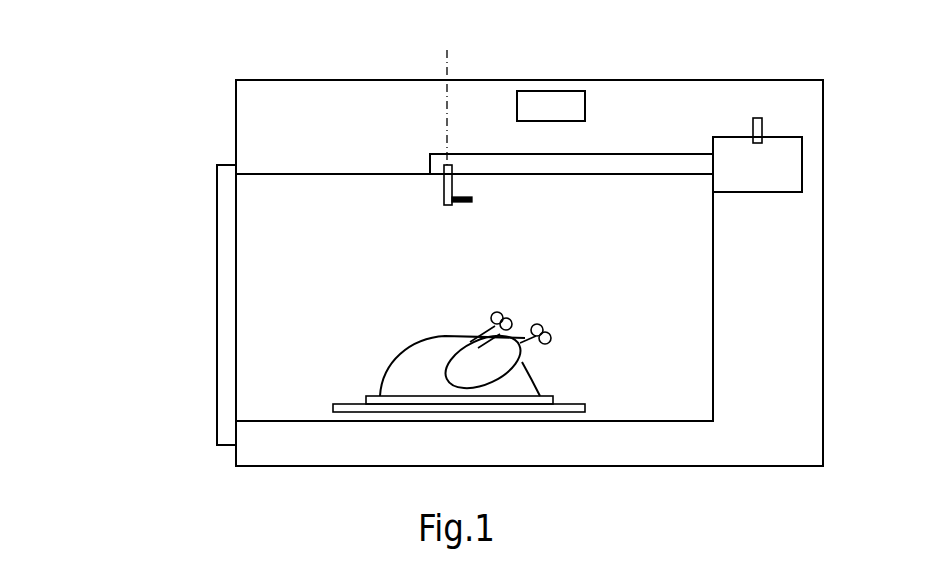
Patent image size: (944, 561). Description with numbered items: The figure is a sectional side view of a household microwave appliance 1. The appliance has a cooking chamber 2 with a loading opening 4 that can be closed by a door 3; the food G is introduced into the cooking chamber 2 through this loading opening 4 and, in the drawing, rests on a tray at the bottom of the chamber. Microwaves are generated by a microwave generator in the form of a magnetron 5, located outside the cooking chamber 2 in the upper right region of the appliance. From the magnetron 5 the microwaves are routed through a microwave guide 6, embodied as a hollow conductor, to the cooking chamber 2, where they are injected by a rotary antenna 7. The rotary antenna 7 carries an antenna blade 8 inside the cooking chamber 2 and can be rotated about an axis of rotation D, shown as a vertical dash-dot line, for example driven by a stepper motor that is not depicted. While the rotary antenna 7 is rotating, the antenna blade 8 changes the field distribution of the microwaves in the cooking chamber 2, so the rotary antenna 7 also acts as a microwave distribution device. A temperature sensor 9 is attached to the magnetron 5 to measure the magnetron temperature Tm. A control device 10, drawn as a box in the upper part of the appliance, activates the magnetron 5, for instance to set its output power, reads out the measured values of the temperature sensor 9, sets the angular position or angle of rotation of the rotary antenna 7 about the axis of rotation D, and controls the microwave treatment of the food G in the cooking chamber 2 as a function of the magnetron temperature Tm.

The household microwave appliance 1 is at (147, 113).
The cooking chamber 2 is at (262, 364).
The door 3 is at (225, 222).
The loading opening 4 is at (252, 285).
The magnetron 5 is at (803, 165).
The microwave guide 6 is at (627, 158).
The rotary antenna 7 is at (444, 187).
The antenna blade 8 is at (460, 203).
The temperature sensor 9 is at (752, 130).
The control device 10 is at (560, 97).
The axis of rotation D is at (448, 53).
The food G is at (418, 338).